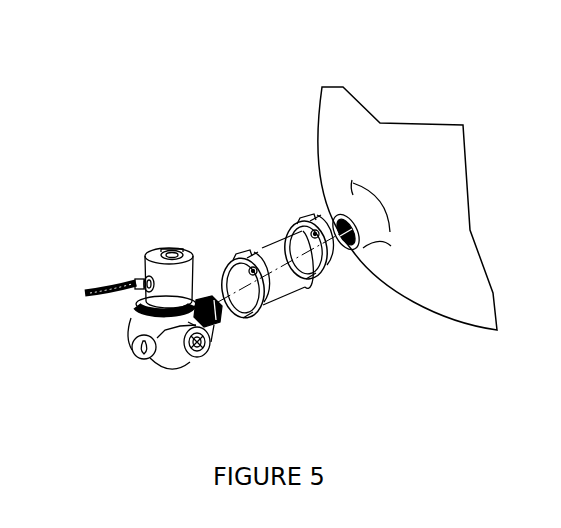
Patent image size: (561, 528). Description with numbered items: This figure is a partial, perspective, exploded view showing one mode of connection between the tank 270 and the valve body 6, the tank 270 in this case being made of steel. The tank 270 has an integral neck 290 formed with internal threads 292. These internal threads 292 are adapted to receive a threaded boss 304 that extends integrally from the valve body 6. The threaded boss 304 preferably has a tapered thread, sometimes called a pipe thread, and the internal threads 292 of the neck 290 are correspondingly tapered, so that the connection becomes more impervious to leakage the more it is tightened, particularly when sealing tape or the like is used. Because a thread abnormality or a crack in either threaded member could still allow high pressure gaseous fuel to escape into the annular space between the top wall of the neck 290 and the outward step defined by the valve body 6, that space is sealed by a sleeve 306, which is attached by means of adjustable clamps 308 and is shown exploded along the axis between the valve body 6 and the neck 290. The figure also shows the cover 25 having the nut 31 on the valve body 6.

The tank 270 is at (333, 108).
The neck 290 is at (352, 203).
The internal threads 292 is at (350, 243).
The sleeve 306 is at (268, 248).
The adjustable clamps 308 is at (329, 280).
The threaded boss 304 is at (213, 323).
The nut 31 is at (168, 250).
The cover 25 is at (147, 257).
The valve body 6 is at (172, 363).